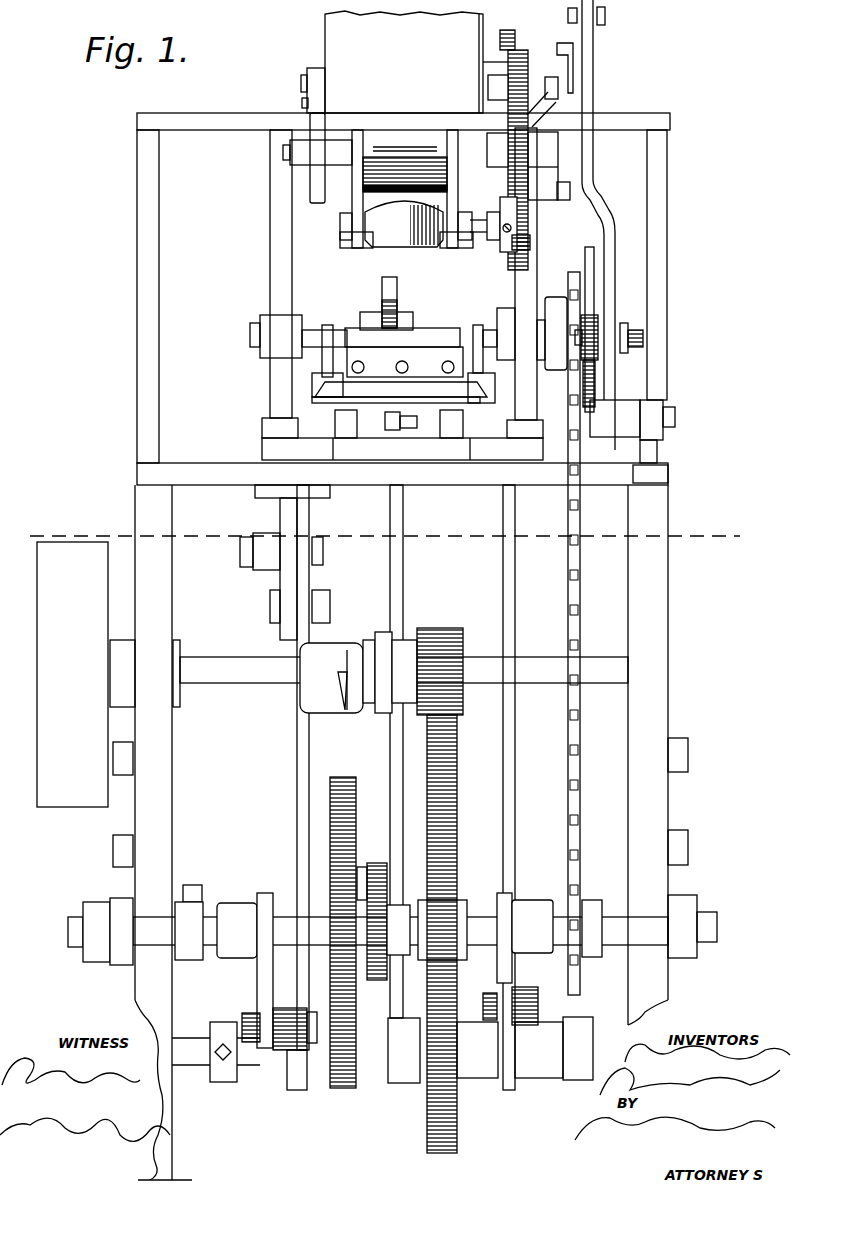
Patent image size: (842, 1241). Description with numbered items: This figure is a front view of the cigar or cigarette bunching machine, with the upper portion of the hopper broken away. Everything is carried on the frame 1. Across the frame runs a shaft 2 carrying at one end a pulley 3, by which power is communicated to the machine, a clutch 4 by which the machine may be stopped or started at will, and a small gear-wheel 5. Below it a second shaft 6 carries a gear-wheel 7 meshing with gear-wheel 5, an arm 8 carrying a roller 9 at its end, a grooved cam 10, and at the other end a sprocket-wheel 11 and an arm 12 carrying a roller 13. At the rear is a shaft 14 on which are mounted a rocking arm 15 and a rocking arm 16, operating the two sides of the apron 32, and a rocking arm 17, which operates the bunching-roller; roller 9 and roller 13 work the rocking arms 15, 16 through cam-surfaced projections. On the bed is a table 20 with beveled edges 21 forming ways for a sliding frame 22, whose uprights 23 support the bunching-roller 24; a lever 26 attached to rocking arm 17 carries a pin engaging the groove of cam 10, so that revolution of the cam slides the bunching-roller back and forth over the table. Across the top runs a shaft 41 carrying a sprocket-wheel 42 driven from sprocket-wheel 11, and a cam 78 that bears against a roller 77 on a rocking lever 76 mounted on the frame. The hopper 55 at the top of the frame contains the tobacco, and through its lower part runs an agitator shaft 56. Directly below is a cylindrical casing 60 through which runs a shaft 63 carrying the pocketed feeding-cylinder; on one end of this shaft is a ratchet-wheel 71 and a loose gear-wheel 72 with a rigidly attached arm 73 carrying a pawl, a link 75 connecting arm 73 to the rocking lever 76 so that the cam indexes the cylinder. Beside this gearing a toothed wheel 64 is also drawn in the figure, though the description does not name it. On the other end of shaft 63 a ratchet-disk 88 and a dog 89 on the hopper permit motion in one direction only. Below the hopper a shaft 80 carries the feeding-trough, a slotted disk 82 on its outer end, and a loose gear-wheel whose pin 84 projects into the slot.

The frame 1 is at (658, 522).
The shaft 2 is at (605, 672).
The pulley 3 is at (60, 552).
The clutch 4 is at (337, 645).
The small gear-wheel 5 is at (440, 640).
The second shaft 6 is at (610, 915).
The gear-wheel 7 is at (462, 805).
The arm 8 is at (264, 978).
The roller 9 is at (282, 1042).
The grooved cam 10 is at (340, 1085).
The sprocket-wheel 11 is at (590, 957).
The arm 12 is at (533, 900).
The roller 13 is at (538, 1005).
The shaft 14 is at (192, 1065).
The rocking arm 15 is at (297, 760).
The rocking arm 16 is at (515, 746).
The rocking arm 17 is at (403, 551).
The table 20 is at (350, 395).
The beveled edges 21 is at (485, 403).
The sliding frame 22 is at (316, 388).
The uprights 23 is at (327, 325).
The bunching-roller 24 is at (428, 328).
The lever 26 is at (373, 863).
The apron 32 is at (410, 312).
The shaft 41 is at (250, 335).
The sprocket-wheel 42 is at (556, 296).
The hopper 55 is at (325, 33).
The shaft 56 is at (302, 84).
The casing 60 is at (405, 183).
The shaft 63 is at (283, 155).
The gear 64 is at (510, 178).
The ratchet-wheel 71 is at (550, 150).
The gear-wheel 72 is at (512, 110).
The arm 73 is at (552, 98).
The link or connecting-rod 75 is at (573, 62).
The rocking lever 76 is at (596, 166).
The roller 77 is at (593, 325).
The cam 78 is at (594, 252).
The shaft 80 is at (486, 240).
The disk 82 is at (506, 252).
The pin 84 is at (530, 250).
The ratchet-disk 88 is at (318, 175).
The dog 89 is at (302, 102).